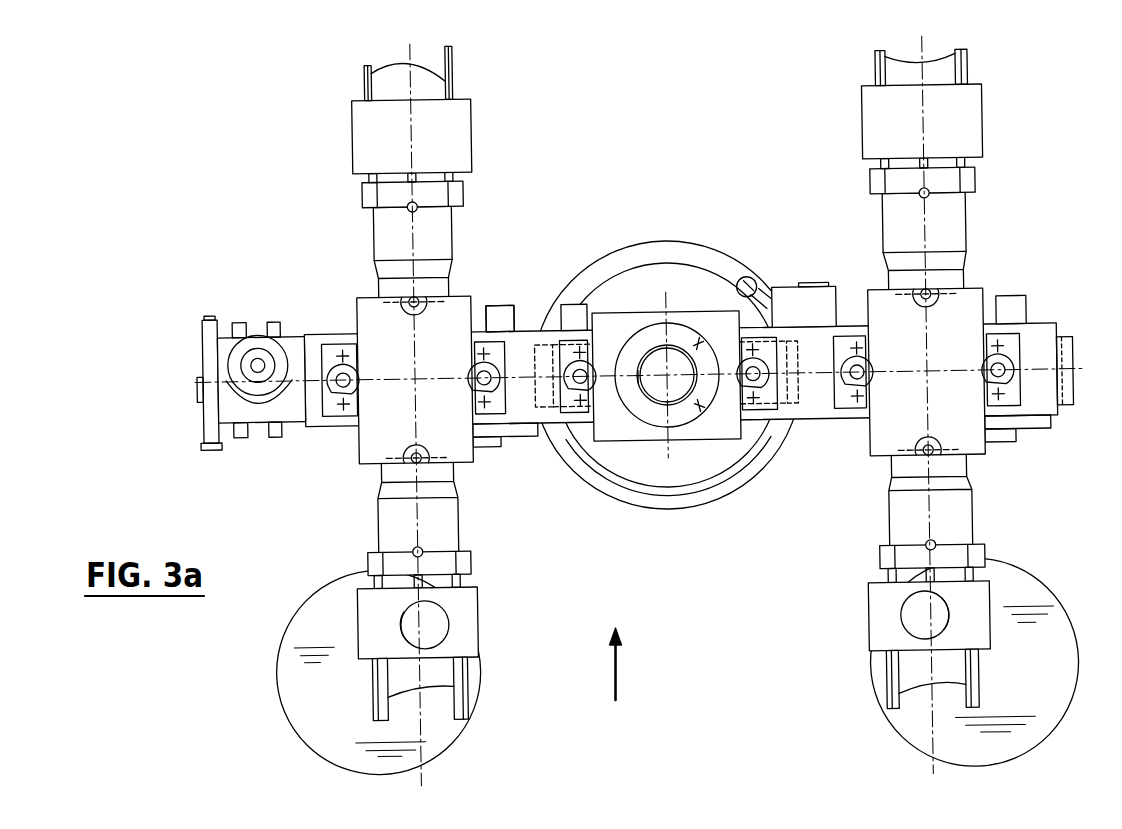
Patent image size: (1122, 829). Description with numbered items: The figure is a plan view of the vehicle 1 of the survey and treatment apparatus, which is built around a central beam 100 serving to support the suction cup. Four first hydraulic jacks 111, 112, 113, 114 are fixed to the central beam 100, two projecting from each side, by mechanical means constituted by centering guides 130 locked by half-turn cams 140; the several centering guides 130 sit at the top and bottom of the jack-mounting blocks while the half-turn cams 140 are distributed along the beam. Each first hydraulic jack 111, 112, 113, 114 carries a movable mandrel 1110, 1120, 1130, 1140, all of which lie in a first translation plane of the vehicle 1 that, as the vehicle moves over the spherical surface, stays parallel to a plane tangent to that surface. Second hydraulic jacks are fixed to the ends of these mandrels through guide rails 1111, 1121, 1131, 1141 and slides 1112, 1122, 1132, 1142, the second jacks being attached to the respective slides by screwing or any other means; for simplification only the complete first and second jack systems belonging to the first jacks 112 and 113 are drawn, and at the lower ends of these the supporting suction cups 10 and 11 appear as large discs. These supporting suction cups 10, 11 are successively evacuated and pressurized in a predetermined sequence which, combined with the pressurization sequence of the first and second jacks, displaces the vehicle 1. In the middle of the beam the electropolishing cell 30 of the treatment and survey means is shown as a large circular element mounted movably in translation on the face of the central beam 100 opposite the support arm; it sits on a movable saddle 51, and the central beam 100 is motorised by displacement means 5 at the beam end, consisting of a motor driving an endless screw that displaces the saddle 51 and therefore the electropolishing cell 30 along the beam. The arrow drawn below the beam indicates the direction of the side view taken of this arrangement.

The vehicle 1 is at (524, 326).
The displacement means 5 is at (235, 343).
The supporting suction cup 10 is at (439, 729).
The supporting suction cup 11 is at (905, 728).
The electropolishing cell 30 is at (650, 260).
The movable saddle 51 is at (639, 445).
The central beam 100 is at (814, 407).
The first hydraulic jack 111 is at (448, 217).
The first hydraulic jack 112 is at (443, 517).
The first hydraulic jack 113 is at (891, 523).
The first hydraulic jack 114 is at (895, 228).
The centering guide 130 is at (419, 296).
The half-turn cam 140 is at (340, 371).
The movable mandrel 1110 is at (413, 166).
The guide rail 1111 is at (452, 76).
The slide 1112 is at (362, 125).
The movable mandrel 1120 is at (452, 572).
The guide rail 1121 is at (450, 697).
The slide 1122 is at (474, 607).
The movable mandrel 1130 is at (897, 564).
The guide rail 1131 is at (957, 690).
The slide 1132 is at (879, 626).
The movable mandrel 1140 is at (928, 164).
The guide rail 1141 is at (890, 65).
The slide 1142 is at (872, 128).